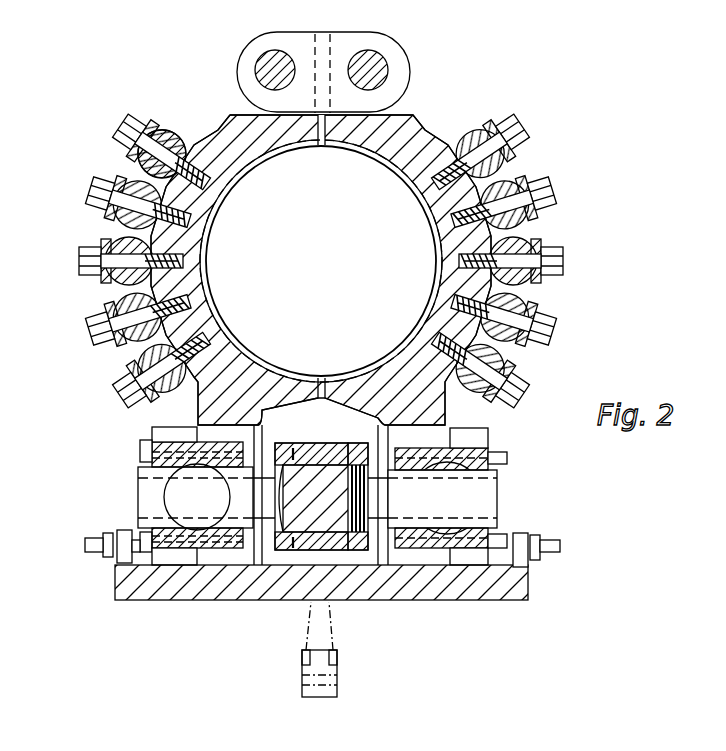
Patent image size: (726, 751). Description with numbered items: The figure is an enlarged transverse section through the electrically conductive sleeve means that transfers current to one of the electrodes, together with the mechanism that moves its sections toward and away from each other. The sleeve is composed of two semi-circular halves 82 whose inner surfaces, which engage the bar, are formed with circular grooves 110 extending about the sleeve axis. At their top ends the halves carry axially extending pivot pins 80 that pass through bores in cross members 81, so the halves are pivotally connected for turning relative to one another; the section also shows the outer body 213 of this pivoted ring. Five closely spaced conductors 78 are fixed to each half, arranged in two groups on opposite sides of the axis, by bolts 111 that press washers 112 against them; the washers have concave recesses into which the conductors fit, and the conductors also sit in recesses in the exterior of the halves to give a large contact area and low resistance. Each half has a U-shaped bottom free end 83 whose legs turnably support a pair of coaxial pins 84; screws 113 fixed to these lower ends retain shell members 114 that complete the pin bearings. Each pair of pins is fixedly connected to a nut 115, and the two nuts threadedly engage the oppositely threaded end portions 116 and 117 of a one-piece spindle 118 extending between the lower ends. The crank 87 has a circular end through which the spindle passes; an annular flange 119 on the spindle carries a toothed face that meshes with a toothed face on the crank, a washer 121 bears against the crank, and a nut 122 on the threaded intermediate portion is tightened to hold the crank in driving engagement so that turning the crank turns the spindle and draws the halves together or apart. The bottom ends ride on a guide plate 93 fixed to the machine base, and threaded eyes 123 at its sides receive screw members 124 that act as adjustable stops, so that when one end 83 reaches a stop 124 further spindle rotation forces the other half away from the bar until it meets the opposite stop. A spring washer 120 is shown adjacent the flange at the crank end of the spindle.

The conductors 78 is at (110, 294).
The pivot pins 80 is at (383, 66).
The cross members 81 is at (319, 34).
The semi-circular sleeve halves 82 is at (150, 236).
The bottom free ends 83 is at (228, 562).
The pins 84 is at (468, 497).
The crank 87 is at (302, 679).
The guide plate 93 is at (190, 577).
The grooves 110 is at (433, 238).
The bolts 111 is at (120, 129).
The washers 112 is at (146, 125).
The screws 113 is at (140, 453).
The shell members 114 is at (158, 433).
The nut 115 is at (177, 466).
The threaded end portion 116 is at (488, 512).
The threaded end portion 117 is at (148, 505).
The spindle 118 is at (306, 533).
The annular flange 119 is at (298, 505).
The spring washer 120 is at (357, 452).
The washer 121 is at (344, 552).
The nut 122 is at (362, 552).
The threaded eyes 123 is at (123, 567).
The screw members 124 is at (85, 546).
The clamping ring body 213 is at (425, 150).